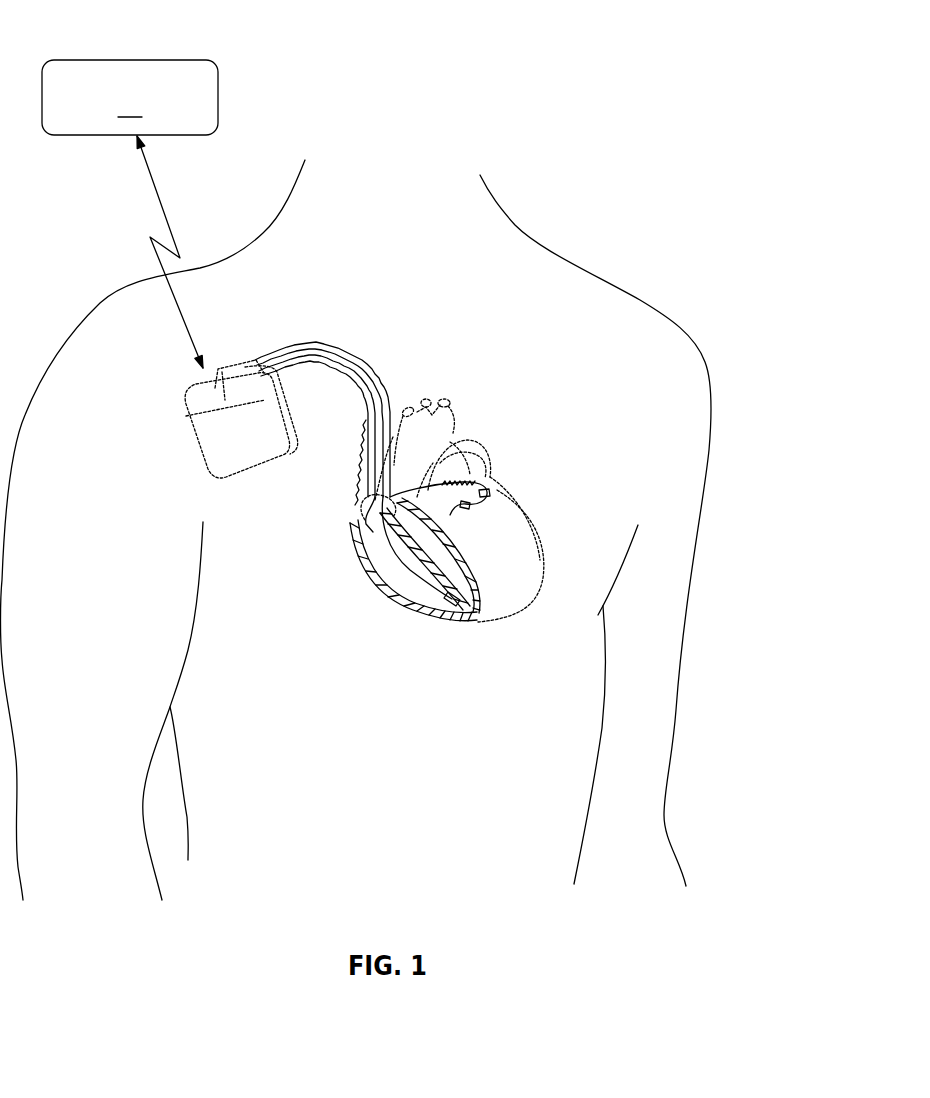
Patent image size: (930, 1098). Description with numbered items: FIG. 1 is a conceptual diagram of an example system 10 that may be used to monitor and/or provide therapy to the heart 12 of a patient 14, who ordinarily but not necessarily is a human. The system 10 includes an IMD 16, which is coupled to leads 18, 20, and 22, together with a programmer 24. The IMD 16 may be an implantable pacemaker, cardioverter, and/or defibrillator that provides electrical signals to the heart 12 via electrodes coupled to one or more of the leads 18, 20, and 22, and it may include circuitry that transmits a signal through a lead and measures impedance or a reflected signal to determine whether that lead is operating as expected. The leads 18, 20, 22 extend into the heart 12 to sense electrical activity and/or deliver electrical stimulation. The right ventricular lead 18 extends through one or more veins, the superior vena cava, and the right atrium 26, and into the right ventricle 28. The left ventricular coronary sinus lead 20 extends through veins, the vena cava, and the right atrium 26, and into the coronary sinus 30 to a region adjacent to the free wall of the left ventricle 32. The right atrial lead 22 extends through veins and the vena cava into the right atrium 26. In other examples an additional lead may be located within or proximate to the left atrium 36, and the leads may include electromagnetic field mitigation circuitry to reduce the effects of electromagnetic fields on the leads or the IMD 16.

The system 10 is at (548, 60).
The heart 12 is at (431, 544).
The patient 14 is at (580, 267).
The IMD 16 is at (188, 447).
The right ventricular lead 18 is at (349, 364).
The left ventricular coronary sinus lead 20 is at (390, 378).
The right atrial lead 22 is at (368, 396).
The programmer 24 is at (130, 214).
The right atrium 26 is at (363, 523).
The right ventricle 28 is at (402, 578).
The coronary sinus 30 is at (407, 489).
The left ventricle 32 is at (510, 537).
The left atrium 36 is at (450, 442).